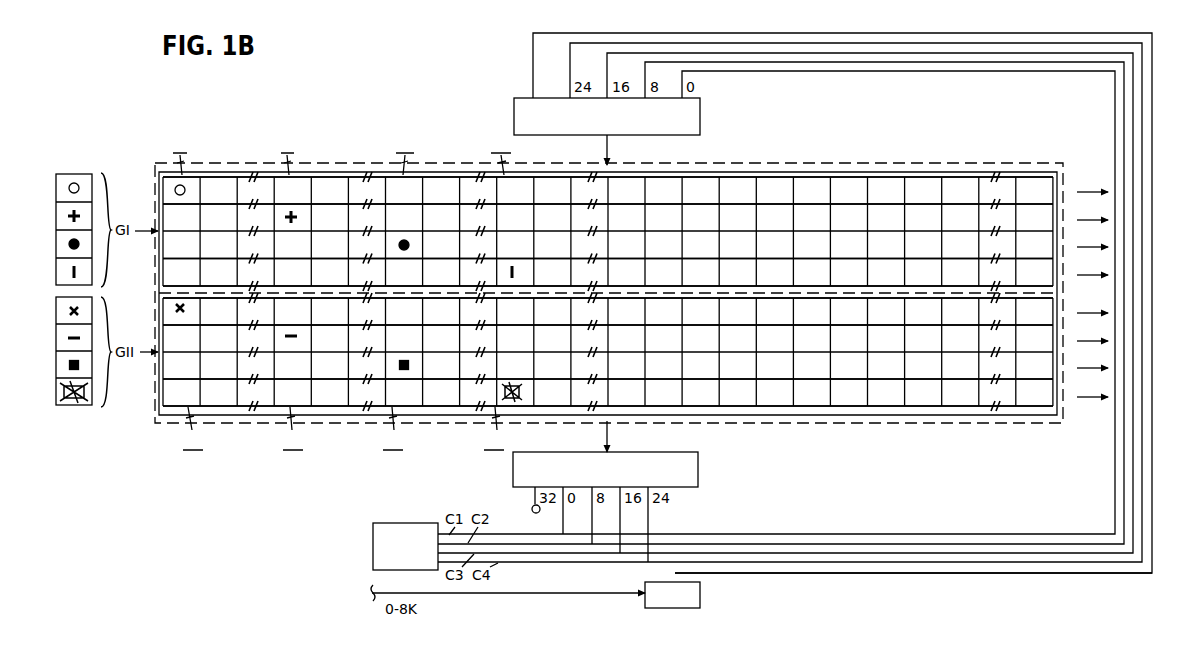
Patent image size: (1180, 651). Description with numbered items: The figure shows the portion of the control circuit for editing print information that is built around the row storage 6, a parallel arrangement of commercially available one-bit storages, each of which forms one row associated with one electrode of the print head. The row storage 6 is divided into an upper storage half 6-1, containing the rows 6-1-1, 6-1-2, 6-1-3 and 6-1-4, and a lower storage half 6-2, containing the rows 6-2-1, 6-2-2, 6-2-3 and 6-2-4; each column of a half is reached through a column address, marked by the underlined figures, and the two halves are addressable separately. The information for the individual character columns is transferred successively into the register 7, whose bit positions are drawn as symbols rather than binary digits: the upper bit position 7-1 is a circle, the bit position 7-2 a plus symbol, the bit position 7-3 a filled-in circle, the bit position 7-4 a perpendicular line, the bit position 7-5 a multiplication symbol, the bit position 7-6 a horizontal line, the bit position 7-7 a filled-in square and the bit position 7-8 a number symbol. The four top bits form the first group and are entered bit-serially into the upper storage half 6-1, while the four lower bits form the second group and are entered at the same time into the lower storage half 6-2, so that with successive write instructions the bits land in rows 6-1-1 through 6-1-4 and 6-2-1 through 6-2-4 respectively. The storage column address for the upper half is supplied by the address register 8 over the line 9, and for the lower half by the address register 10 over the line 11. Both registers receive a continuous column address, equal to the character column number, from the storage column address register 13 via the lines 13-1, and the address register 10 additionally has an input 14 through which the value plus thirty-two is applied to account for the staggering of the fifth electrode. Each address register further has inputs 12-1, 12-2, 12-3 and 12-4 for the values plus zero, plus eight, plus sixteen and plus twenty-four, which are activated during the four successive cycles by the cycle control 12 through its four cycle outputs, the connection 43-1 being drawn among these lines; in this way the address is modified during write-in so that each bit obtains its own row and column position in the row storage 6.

The row storage 6 is at (1028, 162).
The upper storage half 6-1 is at (1060, 183).
The lower storage half 6-2 is at (1060, 412).
The first row of upper storage half 6-1-1 is at (160, 165).
The second row of upper storage half 6-1-2 is at (158, 200).
The third row of upper storage half 6-1-3 is at (160, 253).
The fourth row of upper storage half 6-1-4 is at (160, 281).
The first row of lower storage half 6-2-1 is at (160, 300).
The second row of lower storage half 6-2-2 is at (160, 323).
The third row of lower storage half 6-2-3 is at (160, 373).
The fourth row of lower storage half 6-2-4 is at (160, 401).
The register 7 is at (76, 170).
The upper bit position 7-1 is at (54, 184).
The second bit position 7-2 is at (54, 212).
The third bit position 7-3 is at (54, 240).
The fourth bit position 7-4 is at (54, 268).
The fifth bit position 7-5 is at (54, 307).
The sixth bit position 7-6 is at (54, 334).
The seventh bit position 7-7 is at (54, 361).
The eighth bit position 7-8 is at (54, 388).
The address register 8 is at (700, 118).
The address line from first address register 9 is at (609, 155).
The address register 10 is at (700, 470).
The address line from second address register 11 is at (608, 446).
The cycle control 12 is at (385, 526).
The input line for value +0 12-1 is at (787, 72).
The input line for value +8 12-2 is at (713, 63).
The input line for value +16 12-3 is at (665, 53).
The input line for value +24 12-4 is at (603, 44).
The storage column address register 13 is at (700, 596).
The lines 13-1 is at (547, 36).
The input 14 is at (533, 499).
The connection line 43-1 is at (871, 574).